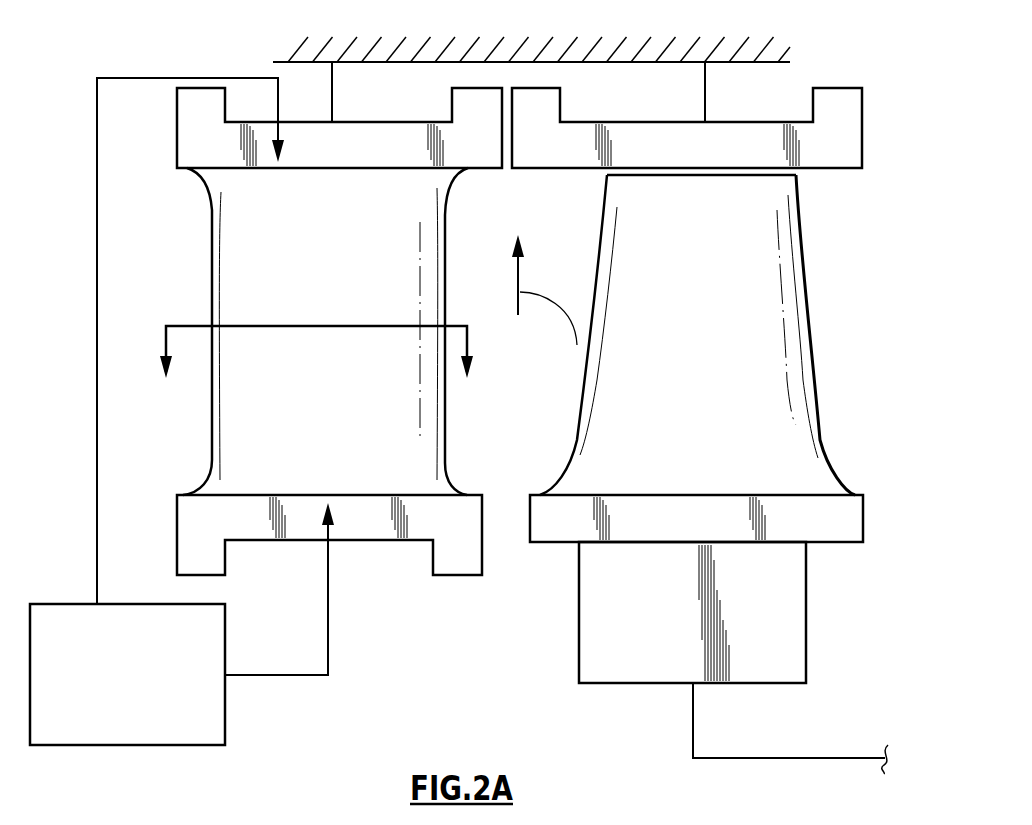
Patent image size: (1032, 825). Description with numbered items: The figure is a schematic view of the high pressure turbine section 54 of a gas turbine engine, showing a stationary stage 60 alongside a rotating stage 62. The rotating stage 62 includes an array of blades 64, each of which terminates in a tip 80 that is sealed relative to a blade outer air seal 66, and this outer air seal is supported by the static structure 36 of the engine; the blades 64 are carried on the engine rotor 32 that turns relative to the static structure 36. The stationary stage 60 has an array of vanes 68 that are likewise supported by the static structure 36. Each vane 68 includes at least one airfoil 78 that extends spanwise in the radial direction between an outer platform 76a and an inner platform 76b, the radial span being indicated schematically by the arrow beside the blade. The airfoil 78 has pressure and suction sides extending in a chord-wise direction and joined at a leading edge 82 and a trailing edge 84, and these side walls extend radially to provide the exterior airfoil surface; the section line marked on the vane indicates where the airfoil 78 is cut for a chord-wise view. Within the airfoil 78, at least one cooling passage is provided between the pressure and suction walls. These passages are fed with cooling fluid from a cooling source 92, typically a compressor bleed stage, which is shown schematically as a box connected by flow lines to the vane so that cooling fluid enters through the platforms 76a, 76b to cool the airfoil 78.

The rotor shaft 32 is at (816, 757).
The static structure 36 is at (783, 57).
The high pressure turbine section 54 is at (706, 454).
The stationary stage 60 is at (309, 293).
The rotating stage 62 is at (694, 129).
The blade 64 is at (800, 446).
The blade outer air seal 66 is at (815, 150).
The vane 68 is at (309, 331).
The outer platform 76a is at (330, 158).
The inner platform 76b is at (248, 510).
The airfoil 78 is at (228, 260).
The tip 80 is at (648, 175).
The leading edge 82 is at (210, 300).
The trailing edge 84 is at (447, 275).
The cooling source 92 is at (225, 725).